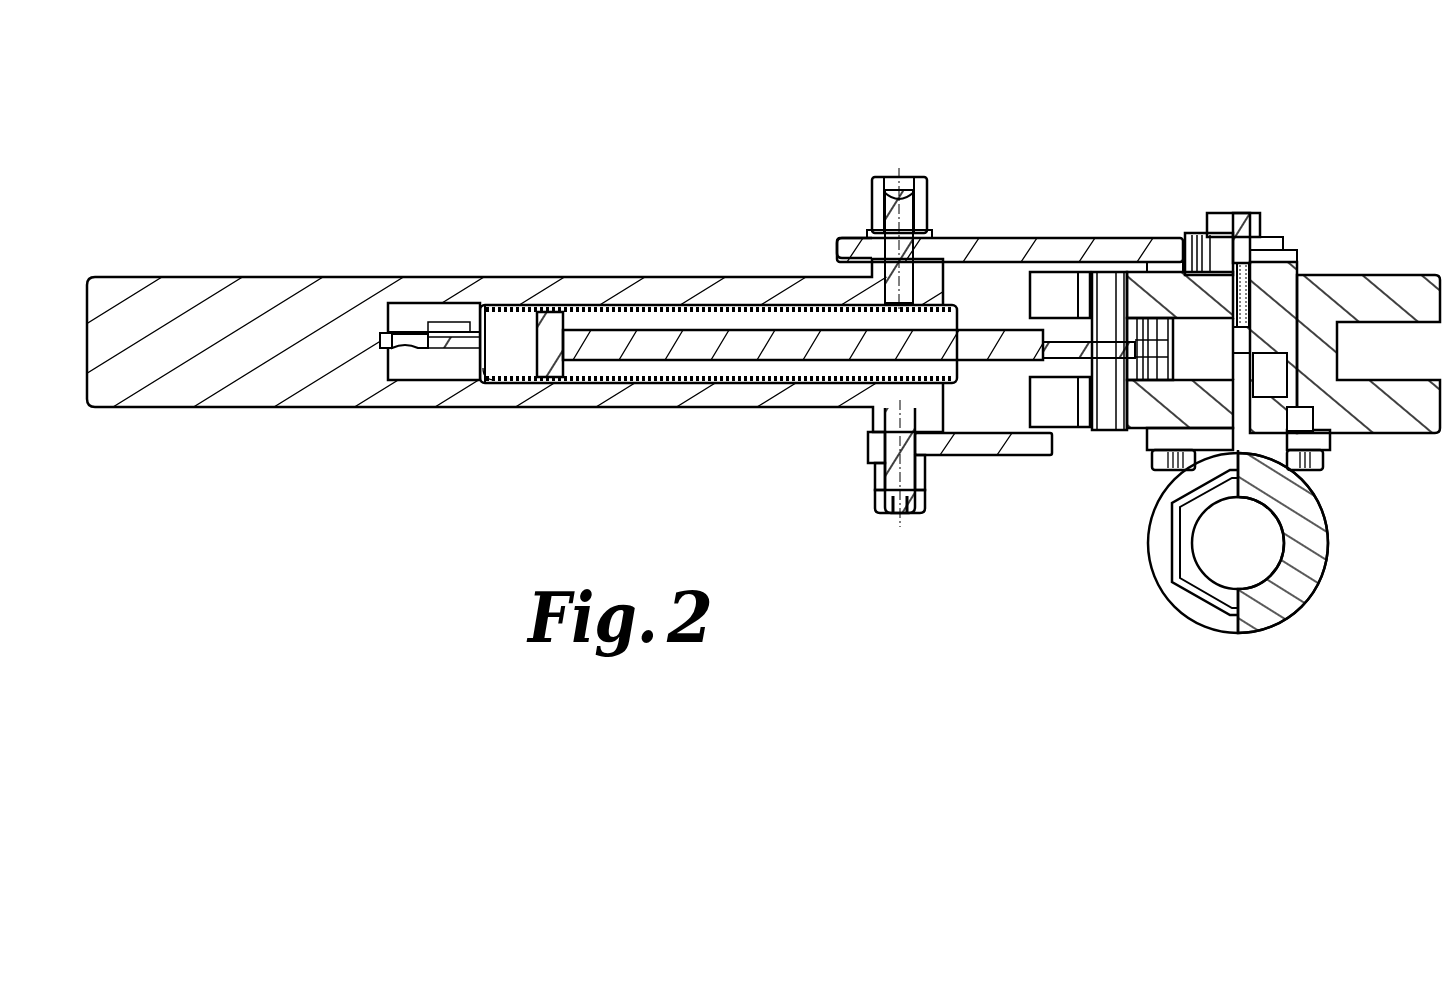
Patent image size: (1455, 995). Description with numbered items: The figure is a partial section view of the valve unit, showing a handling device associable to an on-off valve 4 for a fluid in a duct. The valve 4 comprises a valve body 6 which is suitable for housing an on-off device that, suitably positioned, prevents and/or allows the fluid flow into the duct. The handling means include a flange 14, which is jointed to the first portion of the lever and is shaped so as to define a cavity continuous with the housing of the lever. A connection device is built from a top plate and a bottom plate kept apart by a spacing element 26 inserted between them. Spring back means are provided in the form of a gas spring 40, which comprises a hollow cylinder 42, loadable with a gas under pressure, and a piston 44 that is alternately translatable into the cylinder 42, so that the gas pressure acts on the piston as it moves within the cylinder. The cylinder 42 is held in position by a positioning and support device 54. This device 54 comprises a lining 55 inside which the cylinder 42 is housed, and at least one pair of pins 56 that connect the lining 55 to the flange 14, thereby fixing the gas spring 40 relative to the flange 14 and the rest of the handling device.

The on-off valve 4 is at (1352, 565).
The valve body 6 is at (1183, 557).
The flange 14 is at (1045, 230).
The spacing element 26 is at (1312, 345).
The gas spring 40 is at (553, 302).
The hollow cylinder 42 is at (497, 372).
The piston 44 is at (653, 340).
The positioning and support device 54 is at (838, 222).
The lining 55 is at (253, 383).
The pins 56 is at (913, 158).